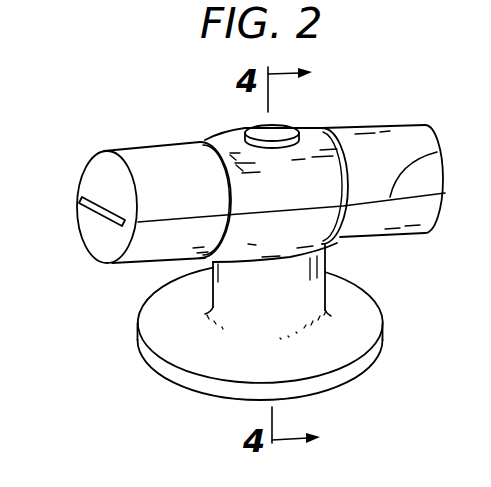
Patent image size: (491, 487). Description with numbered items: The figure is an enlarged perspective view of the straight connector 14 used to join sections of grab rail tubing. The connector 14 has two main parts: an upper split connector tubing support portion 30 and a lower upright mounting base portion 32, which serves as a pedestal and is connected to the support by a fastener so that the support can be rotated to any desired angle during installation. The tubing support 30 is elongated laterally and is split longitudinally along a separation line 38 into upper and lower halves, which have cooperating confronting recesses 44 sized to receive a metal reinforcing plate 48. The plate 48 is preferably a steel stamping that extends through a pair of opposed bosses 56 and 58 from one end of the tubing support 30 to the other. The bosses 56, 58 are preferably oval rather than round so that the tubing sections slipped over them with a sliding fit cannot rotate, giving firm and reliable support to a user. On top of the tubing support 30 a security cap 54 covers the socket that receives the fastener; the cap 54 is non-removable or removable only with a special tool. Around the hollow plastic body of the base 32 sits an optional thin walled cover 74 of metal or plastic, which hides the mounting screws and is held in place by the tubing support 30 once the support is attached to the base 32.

The straight connector 14 is at (176, 90).
The upper split connector tubing support portion 30 is at (88, 153).
The lower upright mounting base portion 32 is at (380, 243).
The separation line 38 is at (437, 152).
The recess 44 is at (477, 438).
The metal reinforcing plate 48 is at (112, 214).
The security cap 54 is at (278, 127).
The boss 56 is at (147, 150).
The boss 58 is at (395, 135).
The thin walled cover 74 is at (323, 353).